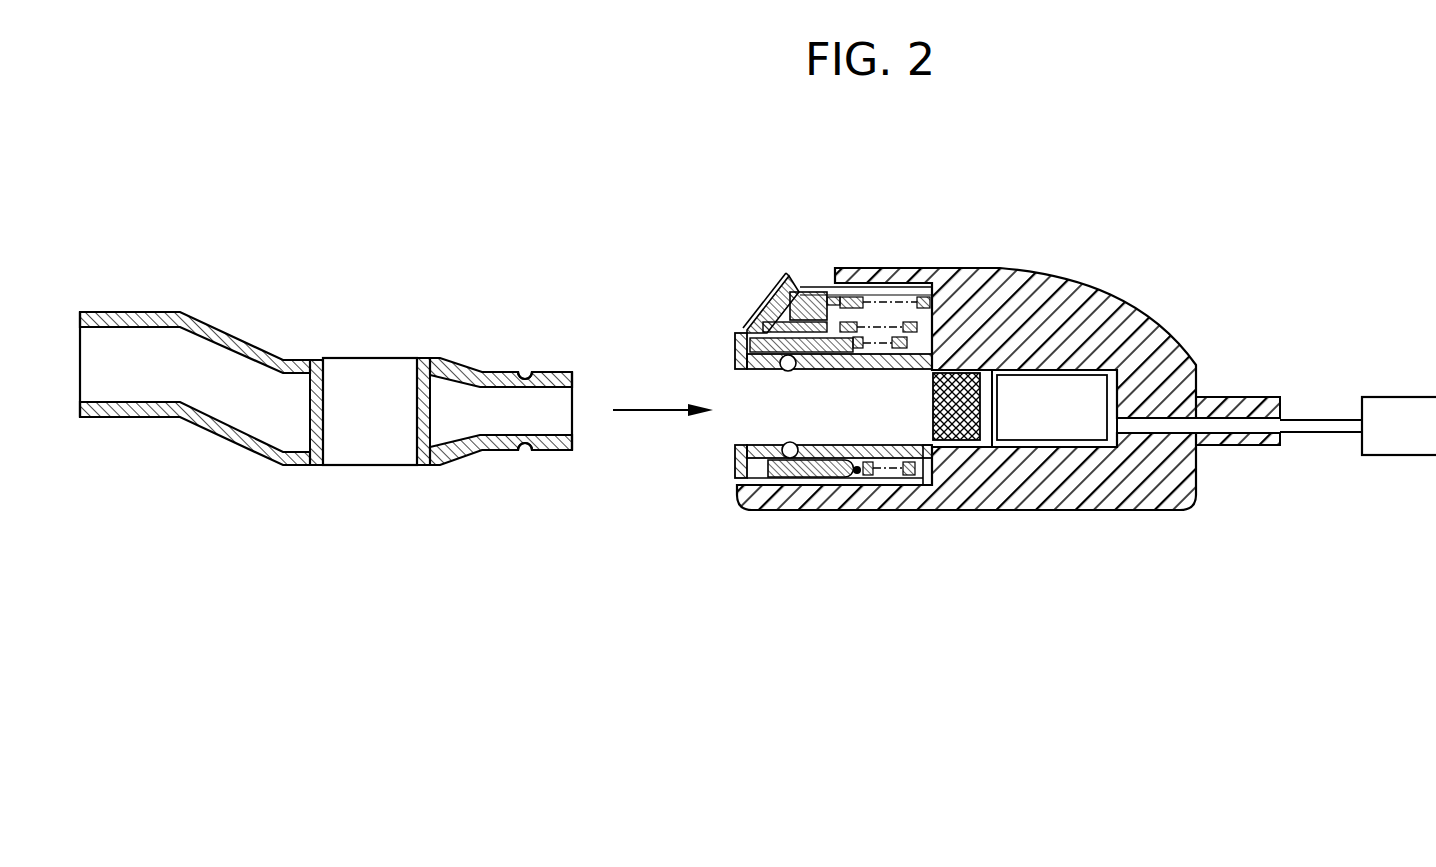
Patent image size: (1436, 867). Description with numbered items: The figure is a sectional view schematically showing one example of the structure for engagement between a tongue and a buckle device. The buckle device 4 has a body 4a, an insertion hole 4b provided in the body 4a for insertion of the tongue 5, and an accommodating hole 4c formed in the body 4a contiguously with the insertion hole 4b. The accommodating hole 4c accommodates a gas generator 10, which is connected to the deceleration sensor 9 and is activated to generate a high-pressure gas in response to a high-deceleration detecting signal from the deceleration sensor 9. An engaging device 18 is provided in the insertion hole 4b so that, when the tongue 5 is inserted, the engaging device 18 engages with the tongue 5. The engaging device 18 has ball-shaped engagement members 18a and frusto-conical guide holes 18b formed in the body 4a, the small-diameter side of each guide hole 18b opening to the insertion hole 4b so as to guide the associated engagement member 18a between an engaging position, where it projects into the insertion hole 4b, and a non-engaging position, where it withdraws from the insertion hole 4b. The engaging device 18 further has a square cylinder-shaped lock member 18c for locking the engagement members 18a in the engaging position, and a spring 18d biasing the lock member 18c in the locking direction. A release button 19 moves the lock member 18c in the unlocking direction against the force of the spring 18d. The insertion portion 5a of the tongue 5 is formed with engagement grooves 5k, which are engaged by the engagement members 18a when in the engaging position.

The buckle device 4 is at (991, 240).
The body 4a is at (734, 354).
The insertion hole 4b is at (866, 446).
The accommodating hole 4c is at (1057, 370).
The tongue 5 is at (304, 320).
The insertion portion 5a is at (560, 450).
The engagement grooves 5k is at (531, 446).
The deceleration sensor 9 is at (1402, 410).
The gas generator 10 is at (1063, 425).
The engaging device 18 is at (799, 389).
The engagement members 18a is at (780, 380).
The guide holes 18b is at (767, 327).
The lock member 18c is at (838, 470).
The spring 18d is at (913, 473).
The release button 19 is at (780, 282).